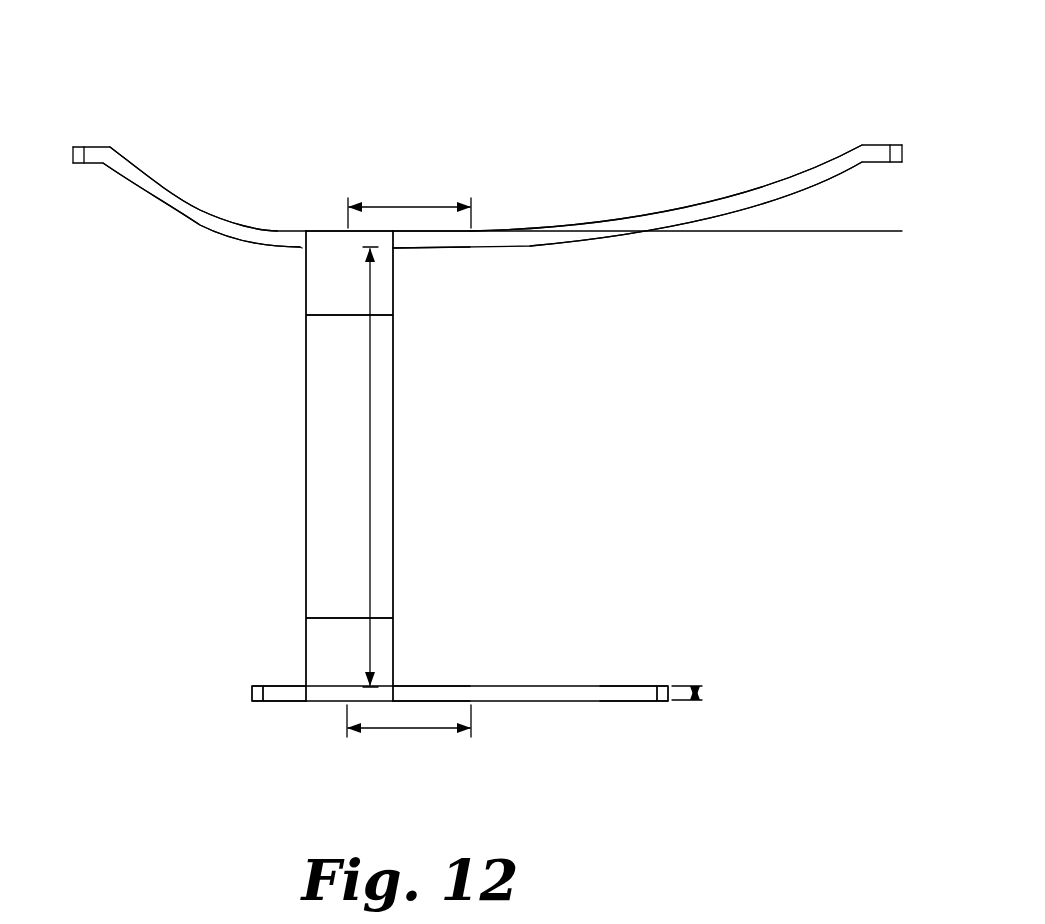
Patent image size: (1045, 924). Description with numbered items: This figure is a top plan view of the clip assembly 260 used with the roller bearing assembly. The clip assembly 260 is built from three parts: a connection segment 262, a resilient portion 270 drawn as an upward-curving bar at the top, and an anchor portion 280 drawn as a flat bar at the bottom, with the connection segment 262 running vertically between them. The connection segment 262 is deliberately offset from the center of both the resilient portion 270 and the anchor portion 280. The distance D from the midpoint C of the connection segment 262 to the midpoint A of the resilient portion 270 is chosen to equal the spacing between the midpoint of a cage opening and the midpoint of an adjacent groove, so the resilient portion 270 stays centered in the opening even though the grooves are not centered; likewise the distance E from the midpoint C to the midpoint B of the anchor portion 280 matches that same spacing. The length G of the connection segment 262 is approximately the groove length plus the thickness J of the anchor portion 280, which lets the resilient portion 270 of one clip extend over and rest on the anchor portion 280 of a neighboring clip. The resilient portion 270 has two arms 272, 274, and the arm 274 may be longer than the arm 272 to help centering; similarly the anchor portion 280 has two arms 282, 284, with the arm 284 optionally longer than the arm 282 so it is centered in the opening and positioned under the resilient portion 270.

The clip assembly 260 is at (646, 136).
The connection segment 262 is at (316, 424).
The resilient portion 270 is at (728, 214).
The arm 272 is at (166, 207).
The arm 274 is at (800, 188).
The anchor portion 280 is at (583, 680).
The arm 282 is at (272, 690).
The arm 284 is at (647, 694).
The midpoint of resilient portion A is at (468, 242).
The midpoint of anchor portion B is at (470, 692).
The midpoint of connection segment C is at (348, 242).
The distance D is at (377, 205).
The distance E is at (375, 730).
The length of connection segment G is at (370, 345).
The thickness of anchor portion J is at (704, 692).